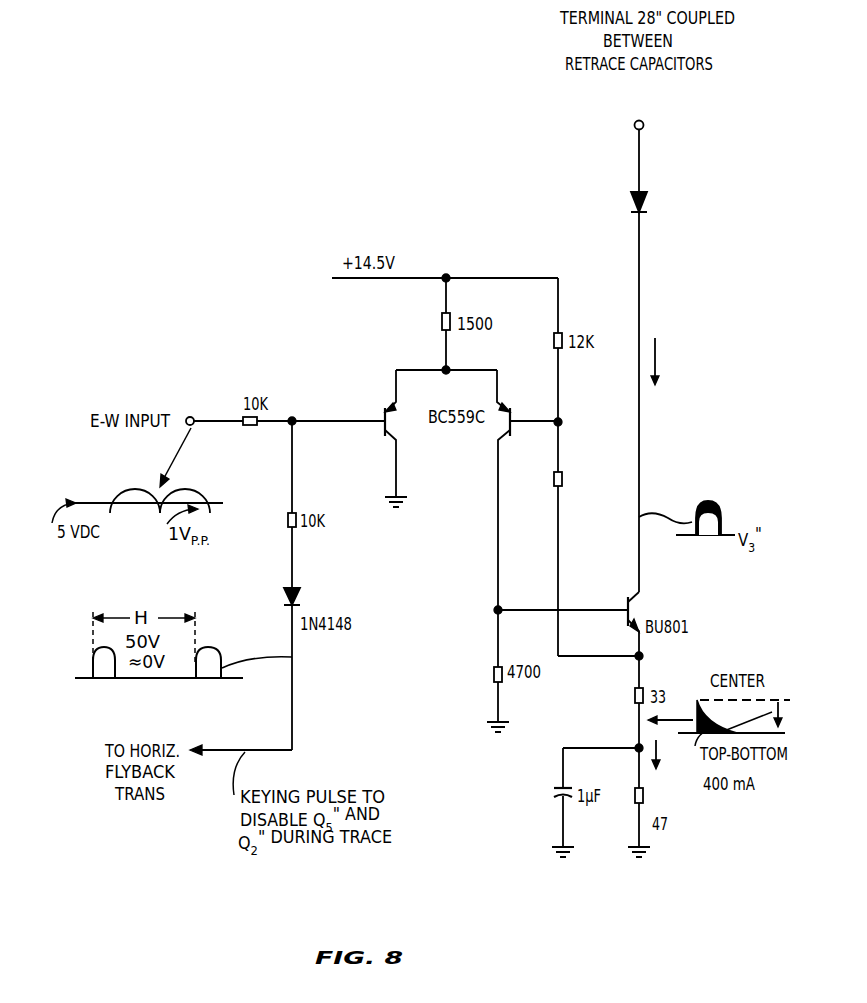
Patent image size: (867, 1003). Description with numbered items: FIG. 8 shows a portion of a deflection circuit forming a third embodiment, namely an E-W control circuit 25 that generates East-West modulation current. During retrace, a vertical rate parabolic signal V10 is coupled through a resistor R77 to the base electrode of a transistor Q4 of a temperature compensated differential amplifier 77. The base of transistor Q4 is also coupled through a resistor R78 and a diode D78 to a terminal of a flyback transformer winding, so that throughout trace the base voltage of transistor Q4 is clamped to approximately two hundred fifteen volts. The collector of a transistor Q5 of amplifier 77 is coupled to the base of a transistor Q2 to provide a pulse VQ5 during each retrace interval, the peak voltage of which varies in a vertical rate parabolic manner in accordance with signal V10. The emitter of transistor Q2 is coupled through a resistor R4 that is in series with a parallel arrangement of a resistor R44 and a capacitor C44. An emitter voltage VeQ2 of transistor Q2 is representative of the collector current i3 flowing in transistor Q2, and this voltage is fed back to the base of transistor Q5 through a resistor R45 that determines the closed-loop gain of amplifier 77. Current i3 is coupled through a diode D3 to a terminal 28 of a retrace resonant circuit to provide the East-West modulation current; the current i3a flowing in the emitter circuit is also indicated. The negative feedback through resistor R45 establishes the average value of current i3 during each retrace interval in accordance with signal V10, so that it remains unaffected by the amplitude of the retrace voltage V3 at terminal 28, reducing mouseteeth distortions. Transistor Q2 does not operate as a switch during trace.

The terminal 28 is at (641, 120).
The retrace voltage V3 is at (634, 125).
The diode D3 is at (648, 199).
The collector current i3 is at (670, 361).
The resistor R45 is at (563, 477).
The transistor Q4 is at (379, 433).
The transistor Q5 is at (515, 490).
The temperature compensated differential amplifier 77 is at (462, 476).
The E-W control circuit 25 is at (545, 583).
The pulse VQ5 is at (492, 614).
The transistor Q2 is at (648, 618).
The emitter voltage VeQ2 is at (638, 655).
The resistor R4 is at (634, 705).
The emitter current i3a is at (670, 756).
The resistor R44 is at (657, 801).
The capacitor C44 is at (558, 797).
The vertical rate parabolic signal V10 is at (215, 419).
The resistor R77 is at (243, 415).
The resistor R78 is at (296, 516).
The diode D78 is at (296, 592).